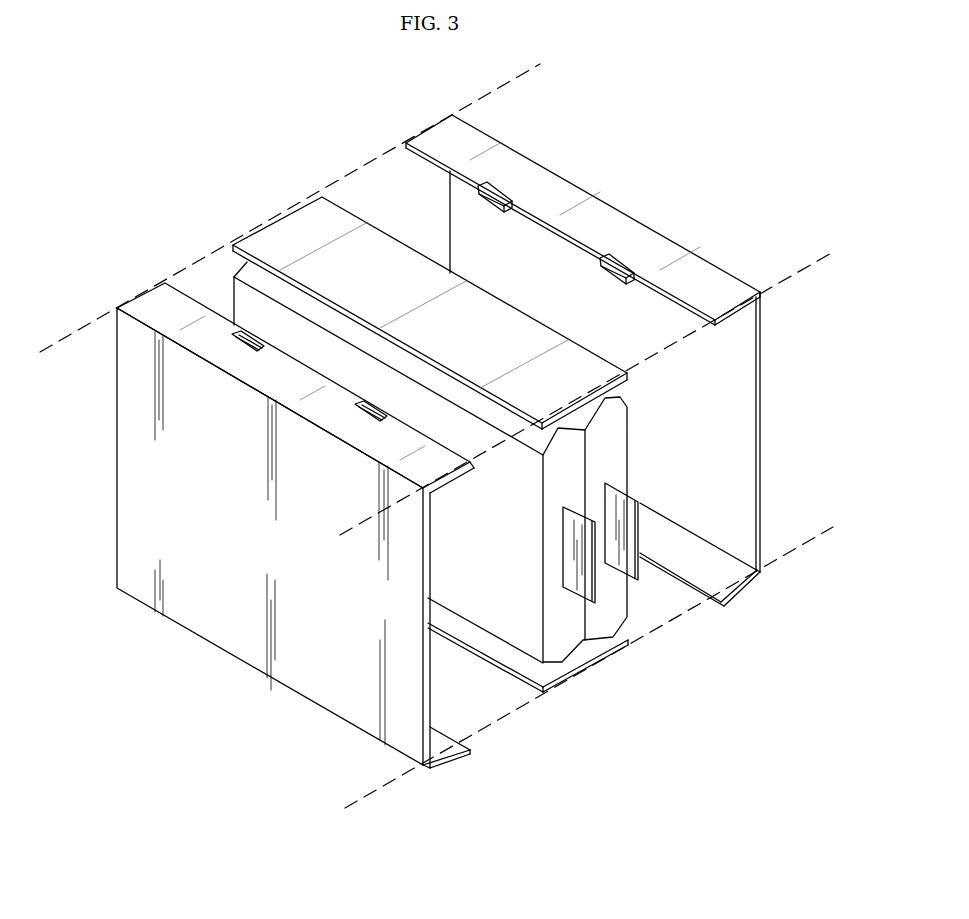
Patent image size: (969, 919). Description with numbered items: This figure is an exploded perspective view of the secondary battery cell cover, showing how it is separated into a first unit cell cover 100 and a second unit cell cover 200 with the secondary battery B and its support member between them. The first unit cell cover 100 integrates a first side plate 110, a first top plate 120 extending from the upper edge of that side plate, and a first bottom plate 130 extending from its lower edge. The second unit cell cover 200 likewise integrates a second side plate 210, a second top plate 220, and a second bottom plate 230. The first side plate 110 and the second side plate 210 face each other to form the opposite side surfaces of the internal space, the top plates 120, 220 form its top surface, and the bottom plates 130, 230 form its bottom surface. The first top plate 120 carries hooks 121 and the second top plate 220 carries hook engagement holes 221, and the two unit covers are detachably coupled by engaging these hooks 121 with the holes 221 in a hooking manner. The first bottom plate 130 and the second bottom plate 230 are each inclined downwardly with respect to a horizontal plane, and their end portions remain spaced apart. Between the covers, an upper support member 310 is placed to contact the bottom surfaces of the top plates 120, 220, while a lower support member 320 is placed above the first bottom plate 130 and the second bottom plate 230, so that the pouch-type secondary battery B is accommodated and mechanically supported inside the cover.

The first unit cell cover 100 is at (610, 367).
The first side plate 110 is at (757, 398).
The first top plate 120 is at (582, 209).
The hooks 121 is at (622, 258).
The first bottom plate 130 is at (734, 601).
The second unit cell cover 200 is at (262, 511).
The second side plate 210 is at (237, 645).
The second top plate 220 is at (295, 357).
The hook engagement holes 221 is at (358, 405).
The second bottom plate 230 is at (452, 757).
The upper support member 310 is at (278, 237).
The lower support member 320 is at (553, 688).
The secondary battery B is at (607, 618).